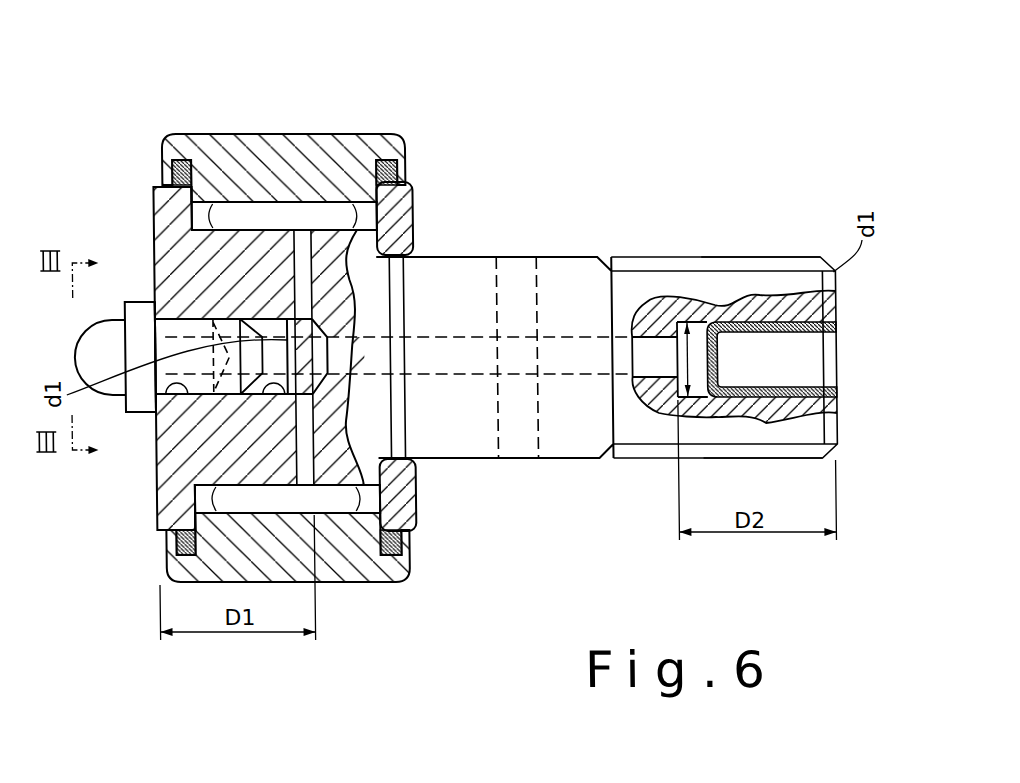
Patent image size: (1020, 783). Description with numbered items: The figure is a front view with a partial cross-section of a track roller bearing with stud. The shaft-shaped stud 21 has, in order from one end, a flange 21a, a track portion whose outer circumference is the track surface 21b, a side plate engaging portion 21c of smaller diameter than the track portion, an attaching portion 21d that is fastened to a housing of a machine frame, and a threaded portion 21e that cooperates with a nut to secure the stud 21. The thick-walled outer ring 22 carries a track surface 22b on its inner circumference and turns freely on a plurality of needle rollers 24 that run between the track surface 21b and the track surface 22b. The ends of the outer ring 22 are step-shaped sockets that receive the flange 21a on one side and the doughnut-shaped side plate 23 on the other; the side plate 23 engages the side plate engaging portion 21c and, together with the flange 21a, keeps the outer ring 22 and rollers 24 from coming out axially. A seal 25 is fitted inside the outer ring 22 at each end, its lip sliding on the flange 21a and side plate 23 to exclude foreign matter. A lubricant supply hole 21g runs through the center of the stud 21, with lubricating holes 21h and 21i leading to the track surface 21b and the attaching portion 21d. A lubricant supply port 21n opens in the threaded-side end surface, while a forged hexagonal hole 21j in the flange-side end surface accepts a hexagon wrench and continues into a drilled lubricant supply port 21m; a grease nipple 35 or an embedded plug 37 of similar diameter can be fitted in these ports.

The stud 21 is at (647, 257).
The flange 21a is at (146, 527).
The track surface 21b is at (316, 228).
The side plate engaging portion 21c is at (401, 292).
The attaching portion 21d is at (567, 280).
The threaded portion 21e is at (764, 257).
The lubricant supply hole 21g is at (520, 364).
The lubricating hole 21h is at (273, 250).
The lubricating hole 21i is at (537, 290).
The hexagonal hole 21j is at (137, 413).
The lubricant supply port 21m is at (154, 522).
The lubricant supply port 21n is at (749, 400).
The outer ring 22 is at (347, 160).
The track surface 22b is at (240, 200).
The side plate 23 is at (403, 215).
The needle rollers 24 is at (279, 203).
The seal 25 is at (178, 160).
The grease nipple 35 is at (135, 302).
The embedded plug 37 is at (840, 337).